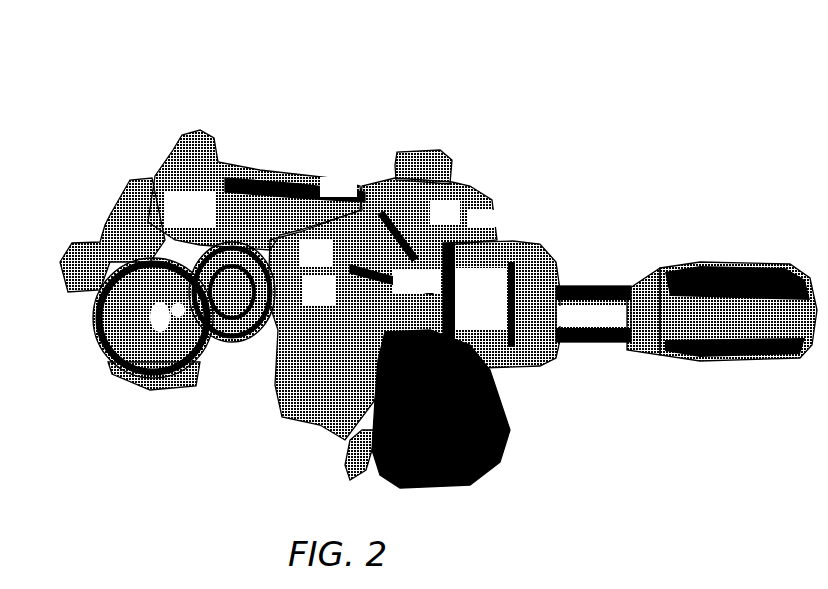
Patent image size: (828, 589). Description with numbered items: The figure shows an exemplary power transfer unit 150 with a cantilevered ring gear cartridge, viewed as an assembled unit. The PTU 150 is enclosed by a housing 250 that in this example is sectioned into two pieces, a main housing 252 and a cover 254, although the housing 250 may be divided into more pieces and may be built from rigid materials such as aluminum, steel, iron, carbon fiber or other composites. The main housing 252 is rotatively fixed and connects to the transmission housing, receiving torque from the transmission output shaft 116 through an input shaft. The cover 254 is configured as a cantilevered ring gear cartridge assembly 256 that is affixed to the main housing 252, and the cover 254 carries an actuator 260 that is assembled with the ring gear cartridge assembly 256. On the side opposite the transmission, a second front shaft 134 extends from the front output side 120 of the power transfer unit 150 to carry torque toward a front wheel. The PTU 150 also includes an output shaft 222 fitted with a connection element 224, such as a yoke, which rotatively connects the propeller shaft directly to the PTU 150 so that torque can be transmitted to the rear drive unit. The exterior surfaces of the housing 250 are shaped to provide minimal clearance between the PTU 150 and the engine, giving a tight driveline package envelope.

The power transfer unit 150 is at (188, 62).
The transmission output shaft 116 is at (82, 246).
The front output side 120 is at (128, 400).
The second front shaft 134 is at (582, 342).
The output shaft 222 is at (165, 382).
The connection element 224 is at (107, 345).
The housing 250 is at (370, 150).
The main housing 252 is at (226, 158).
The cover 254 is at (455, 182).
The ring gear cartridge assembly 256 is at (533, 238).
The actuator 260 is at (428, 495).